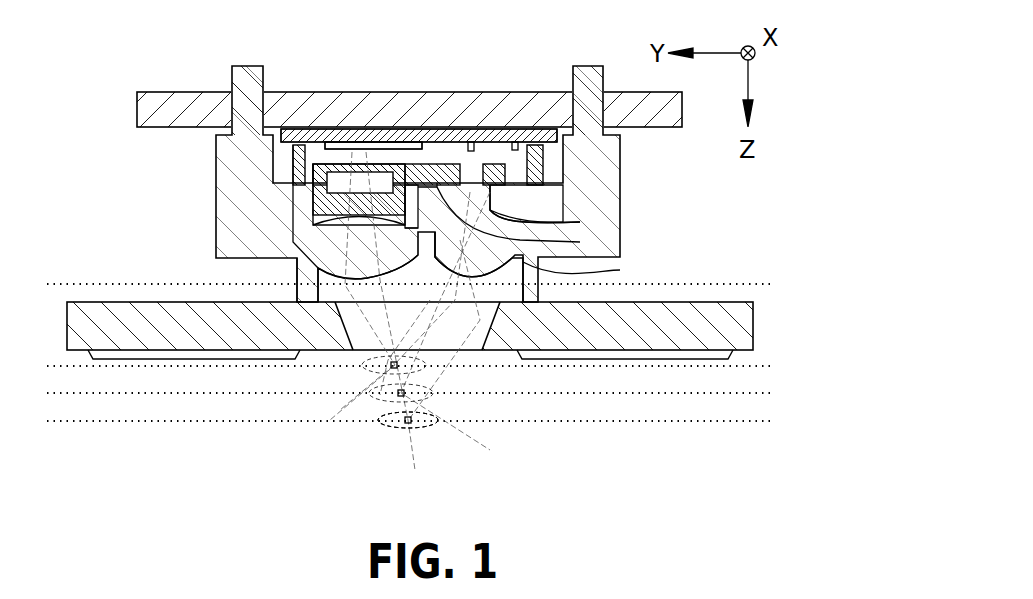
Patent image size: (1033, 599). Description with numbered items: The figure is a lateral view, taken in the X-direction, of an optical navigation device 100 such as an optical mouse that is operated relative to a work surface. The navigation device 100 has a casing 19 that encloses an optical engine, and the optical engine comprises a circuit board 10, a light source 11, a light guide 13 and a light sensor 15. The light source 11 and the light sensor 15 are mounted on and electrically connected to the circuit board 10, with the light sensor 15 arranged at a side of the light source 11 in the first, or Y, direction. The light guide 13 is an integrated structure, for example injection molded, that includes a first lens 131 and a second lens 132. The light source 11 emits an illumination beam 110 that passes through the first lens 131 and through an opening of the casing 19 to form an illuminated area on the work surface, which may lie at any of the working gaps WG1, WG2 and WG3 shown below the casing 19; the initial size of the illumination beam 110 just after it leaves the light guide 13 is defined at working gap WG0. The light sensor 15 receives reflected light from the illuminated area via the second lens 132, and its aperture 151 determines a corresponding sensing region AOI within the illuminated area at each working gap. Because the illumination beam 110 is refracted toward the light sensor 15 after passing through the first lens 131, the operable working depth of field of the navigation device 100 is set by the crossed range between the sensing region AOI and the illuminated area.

The optical navigation device 100 is at (97, 26).
The circuit board 10 is at (532, 141).
The light source 11 is at (478, 148).
The light guide 13 is at (593, 199).
The first lens 131 is at (580, 242).
The second lens 132 is at (318, 270).
The light sensor 15 is at (358, 150).
The aperture 151 is at (343, 206).
The casing 19 is at (717, 325).
The illumination beam 110 is at (350, 418).
The sensing region AOI is at (408, 424).
The working gap WG0 is at (441, 285).
The working gap WG1 is at (441, 366).
The working gap WG2 is at (441, 395).
The working gap WG3 is at (441, 421).